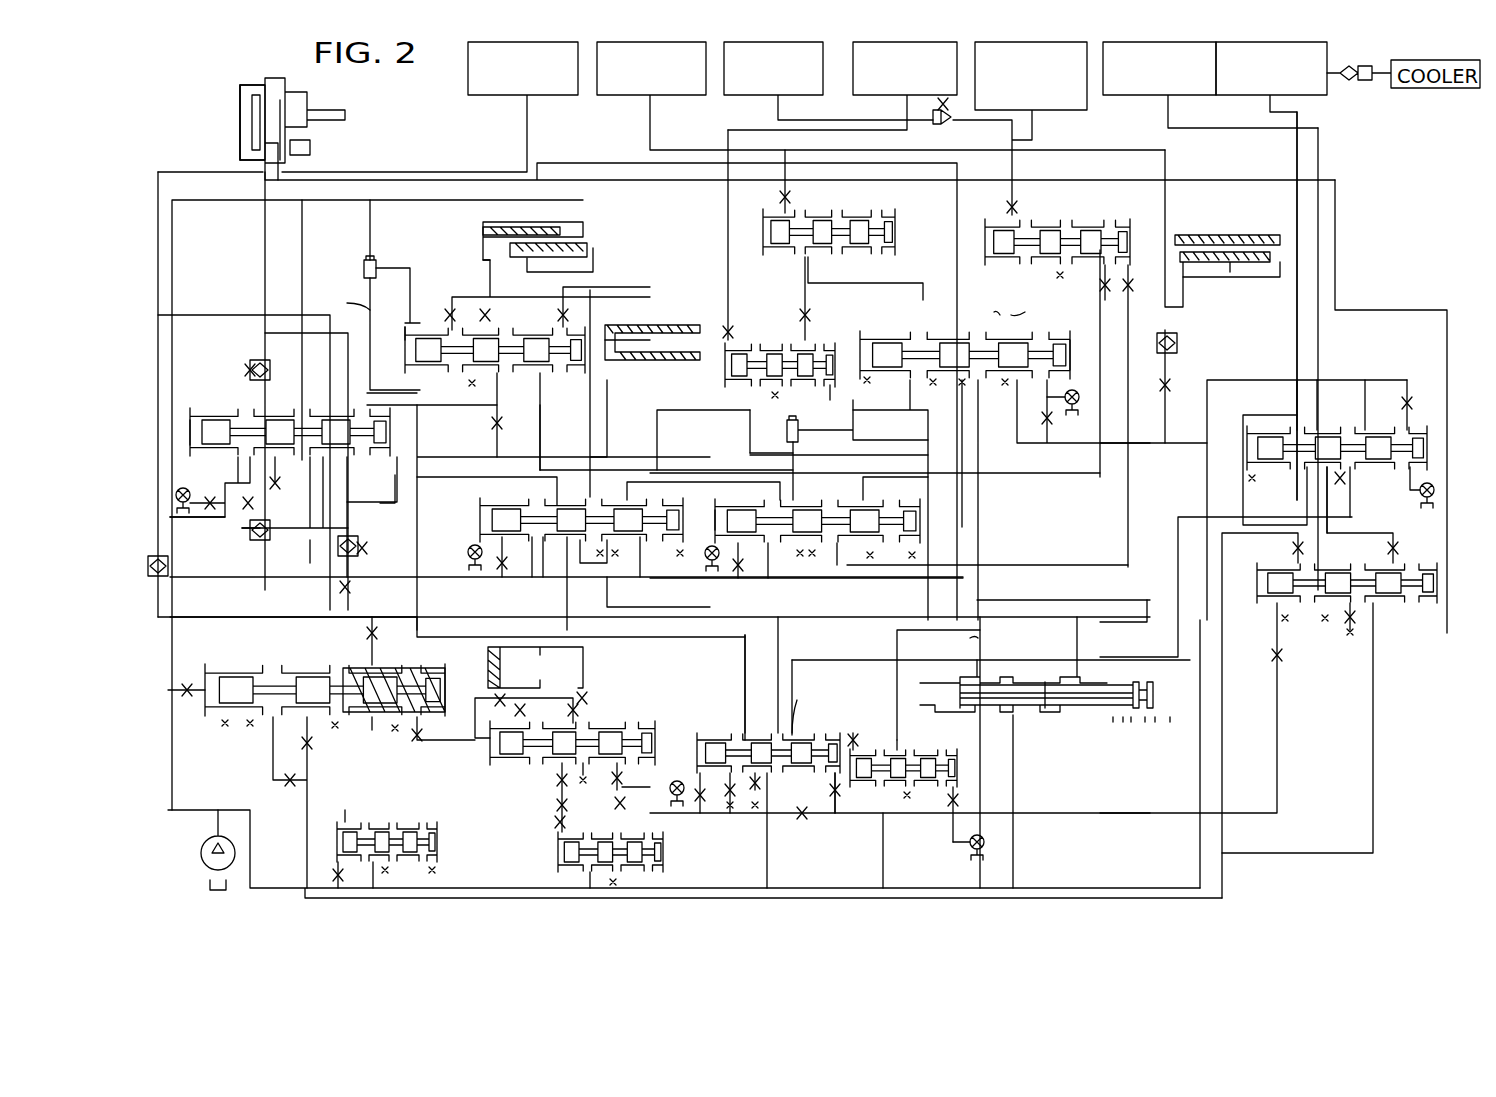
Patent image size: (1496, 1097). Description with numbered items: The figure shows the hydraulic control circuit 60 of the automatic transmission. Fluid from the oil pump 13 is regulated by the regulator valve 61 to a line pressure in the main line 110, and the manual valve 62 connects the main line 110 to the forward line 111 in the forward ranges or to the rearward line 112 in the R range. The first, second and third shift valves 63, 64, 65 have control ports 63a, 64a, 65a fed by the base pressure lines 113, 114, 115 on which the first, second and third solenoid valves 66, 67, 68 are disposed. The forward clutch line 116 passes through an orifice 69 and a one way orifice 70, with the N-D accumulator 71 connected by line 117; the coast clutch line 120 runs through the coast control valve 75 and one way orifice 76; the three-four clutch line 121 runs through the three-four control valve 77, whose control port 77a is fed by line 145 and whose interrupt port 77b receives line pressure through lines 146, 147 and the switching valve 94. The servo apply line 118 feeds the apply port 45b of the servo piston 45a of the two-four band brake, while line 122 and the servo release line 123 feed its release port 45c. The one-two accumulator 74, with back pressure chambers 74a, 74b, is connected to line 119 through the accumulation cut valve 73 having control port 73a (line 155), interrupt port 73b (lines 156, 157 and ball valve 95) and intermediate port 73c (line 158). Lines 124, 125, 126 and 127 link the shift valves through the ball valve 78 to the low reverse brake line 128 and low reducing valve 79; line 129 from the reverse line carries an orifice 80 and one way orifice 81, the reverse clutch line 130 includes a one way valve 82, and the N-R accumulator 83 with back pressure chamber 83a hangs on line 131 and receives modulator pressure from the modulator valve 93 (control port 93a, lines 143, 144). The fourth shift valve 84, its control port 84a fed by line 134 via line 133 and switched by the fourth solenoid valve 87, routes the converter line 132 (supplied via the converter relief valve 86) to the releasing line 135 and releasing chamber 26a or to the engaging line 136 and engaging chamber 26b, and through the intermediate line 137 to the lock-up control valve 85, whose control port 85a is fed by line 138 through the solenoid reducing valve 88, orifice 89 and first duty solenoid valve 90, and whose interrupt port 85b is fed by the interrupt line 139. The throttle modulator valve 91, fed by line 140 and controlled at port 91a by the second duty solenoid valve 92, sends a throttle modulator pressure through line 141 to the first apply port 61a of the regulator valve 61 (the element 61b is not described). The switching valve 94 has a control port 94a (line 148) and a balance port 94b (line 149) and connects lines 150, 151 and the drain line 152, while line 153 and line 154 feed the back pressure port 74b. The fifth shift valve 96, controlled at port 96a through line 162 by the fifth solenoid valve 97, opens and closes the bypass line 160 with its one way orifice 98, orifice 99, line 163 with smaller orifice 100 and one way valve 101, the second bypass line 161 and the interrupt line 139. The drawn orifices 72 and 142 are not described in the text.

The oil pump 13 is at (198, 868).
The releasing chamber 26a is at (1210, 86).
The engaging chamber 26b is at (1290, 100).
The actuator 45a is at (325, 90).
The apply port 45b is at (247, 161).
The release port 45c is at (288, 147).
The hydraulic control circuit 60 is at (211, 119).
The regulator valve 61 is at (202, 656).
The spool 61a is at (397, 728).
The spool 61b is at (350, 720).
The manual valve 62 is at (1066, 730).
The first shift valve 63 is at (652, 505).
The control port 63a is at (498, 503).
The second shift valve 64 is at (890, 505).
The control port 64a is at (718, 504).
The third shift valve 65 is at (889, 327).
The control port 65a is at (1070, 347).
The first solenoid valve 66 is at (465, 553).
The second solenoid valve 67 is at (740, 580).
The third solenoid valve 68 is at (1095, 405).
The orifice 69 is at (1170, 382).
The one way orifice 70 is at (1185, 340).
The N-D accumulator 71 is at (1242, 226).
The orifice 72 is at (502, 432).
The accumulation cut valve 73 is at (429, 331).
The control port 73a is at (560, 317).
The accumulation cut interrupt port 73b is at (395, 332).
The intermediate port 73c is at (535, 388).
The 1-2 accumulator 74 is at (589, 257).
The first back pressure chamber 74a is at (585, 240).
The second back pressure port 74b is at (555, 225).
The coast control valve 75 is at (1090, 225).
The one way orifice 76 is at (1028, 118).
The 3-4 control valve 77 is at (716, 384).
The control port 77a is at (787, 298).
The interrupt port 77b is at (830, 405).
The ball valve 78 is at (839, 426).
The low reducing valve 79 is at (761, 259).
The orifice 80 is at (355, 592).
The one way orifice 81 is at (366, 548).
The one way valve 82 is at (174, 571).
The N-R accumulator 83 is at (692, 335).
The back pressure chamber 83a is at (652, 334).
The fourth shift valve 84 is at (1345, 418).
The control port 84a is at (1420, 402).
The lock-up control valve 85 is at (1425, 648).
The control port 85a is at (1272, 626).
The interrupt port 85b is at (1381, 621).
The converter relief valve 86 is at (340, 811).
The fourth solenoid valve 87 is at (1420, 515).
The solenoid reducing valve 88 is at (552, 849).
The orifice 89 is at (802, 818).
The first duty solenoid valve 90 is at (970, 850).
The throttle modulator valve 91 is at (617, 705).
The control port 91a is at (611, 786).
The second duty solenoid valve 92 is at (675, 815).
The modulator valve 93 is at (925, 746).
The control port 93a is at (958, 750).
The switching valve 94 is at (690, 698).
The control port 94a is at (835, 722).
The balance port 94b is at (730, 675).
The ball valve 95 is at (362, 268).
The fifth shift valve 96 is at (190, 388).
The control port 96a is at (213, 413).
The fifth solenoid valve 97 is at (210, 485).
The one way orifice 98 is at (270, 363).
The orifice 99 is at (280, 487).
The orifice 100 is at (245, 515).
The one way valve 101 is at (255, 540).
The main line 110 is at (200, 800).
The forward line 111 is at (848, 575).
The rearward line 112 is at (452, 617).
The first base pressure line 113 is at (539, 583).
The second base pressure line 114 is at (841, 572).
The third base pressure line 115 is at (1050, 450).
The forward clutch line 116 is at (654, 116).
The line 117 is at (1183, 295).
The servo apply line 118 is at (263, 238).
The line 119 is at (483, 275).
The coast clutch line 120 is at (778, 110).
The 3-4 clutch line 121 is at (904, 114).
The line 122 is at (868, 463).
The servo release line 123 is at (385, 178).
The line 124 is at (631, 557).
The line 125 is at (705, 464).
The line 126 is at (814, 471).
The line 127 is at (912, 392).
The low reverse brake line 128 is at (955, 125).
The line 129 is at (625, 452).
The reverse clutch line 130 is at (527, 113).
The line 131 is at (608, 390).
The converter line 132 is at (1300, 500).
The line 133 is at (1207, 415).
The base control pressure line 134 is at (1412, 380).
The releasing line 135 is at (1321, 153).
The engaging line 136 is at (1292, 153).
The intermediate line 137 is at (1355, 537).
The base control pressure line 138 is at (1275, 726).
The interrupt line 139 is at (665, 195).
The line 140 is at (555, 787).
The line 141 is at (425, 748).
The orifice 142 is at (367, 635).
The line 143 is at (890, 840).
The line 144 is at (788, 261).
The line 145 is at (805, 328).
The interrupt line 146 is at (770, 860).
The interrupt line 147 is at (962, 530).
The line 148 is at (835, 810).
The line 149 is at (722, 835).
The line 150 is at (1357, 490).
The line 151 is at (1353, 377).
The drain line 152 is at (680, 606).
The line 153 is at (592, 422).
The line 154 is at (705, 285).
The line 155 is at (367, 230).
The line 156 is at (390, 263).
The line 157 is at (667, 456).
The line 158 is at (625, 687).
The bypass line 160 is at (263, 353).
The second bypass line 161 is at (210, 313).
The base pressure control line 162 is at (197, 535).
The line 163 is at (260, 535).